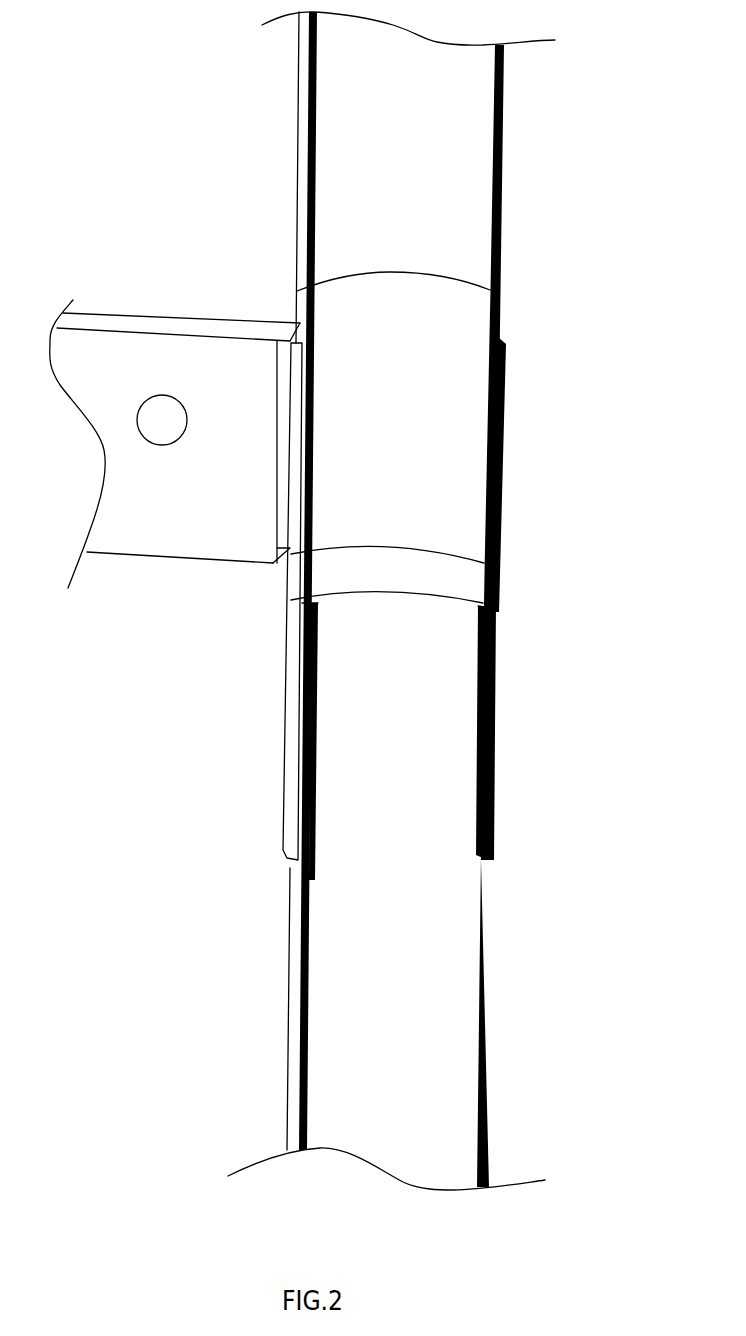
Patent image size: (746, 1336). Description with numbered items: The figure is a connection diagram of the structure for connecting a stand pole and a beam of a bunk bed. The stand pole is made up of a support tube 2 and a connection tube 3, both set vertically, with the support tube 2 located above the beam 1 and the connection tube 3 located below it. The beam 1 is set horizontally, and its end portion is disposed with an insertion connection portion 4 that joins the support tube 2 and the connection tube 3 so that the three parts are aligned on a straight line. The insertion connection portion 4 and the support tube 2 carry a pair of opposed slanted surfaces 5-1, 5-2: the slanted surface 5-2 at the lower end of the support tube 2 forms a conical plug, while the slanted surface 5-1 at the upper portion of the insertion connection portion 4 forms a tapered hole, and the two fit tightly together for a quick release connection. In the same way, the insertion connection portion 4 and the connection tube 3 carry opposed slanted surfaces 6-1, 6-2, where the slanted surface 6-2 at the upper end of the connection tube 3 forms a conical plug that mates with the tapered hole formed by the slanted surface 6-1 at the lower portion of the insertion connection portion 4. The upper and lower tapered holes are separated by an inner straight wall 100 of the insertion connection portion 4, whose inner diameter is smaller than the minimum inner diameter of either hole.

The beam 1 is at (133, 323).
The support tube 2 is at (452, 102).
The connection tube 3 is at (440, 1110).
The insertion connection portion 4 is at (297, 630).
The inner straight wall 100 is at (453, 583).
The slanted surface 5-1 is at (497, 508).
The slanted surface 5-2 is at (297, 323).
The slanted surface 6-1 is at (497, 710).
The slanted surface 6-2 is at (300, 868).